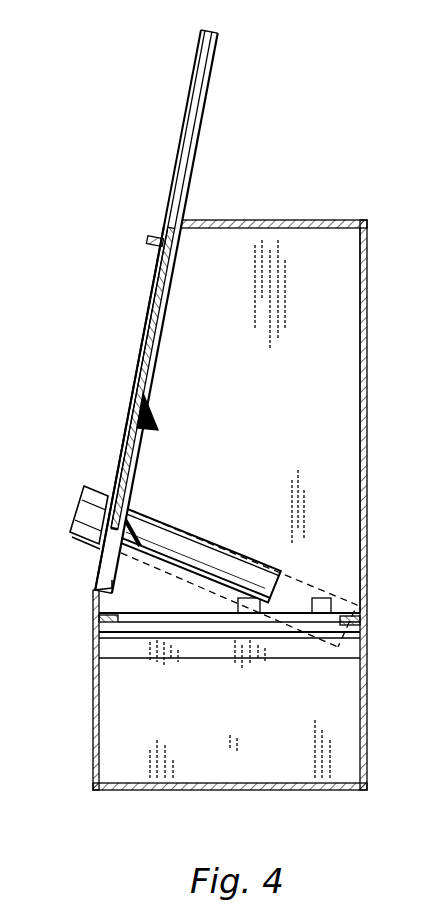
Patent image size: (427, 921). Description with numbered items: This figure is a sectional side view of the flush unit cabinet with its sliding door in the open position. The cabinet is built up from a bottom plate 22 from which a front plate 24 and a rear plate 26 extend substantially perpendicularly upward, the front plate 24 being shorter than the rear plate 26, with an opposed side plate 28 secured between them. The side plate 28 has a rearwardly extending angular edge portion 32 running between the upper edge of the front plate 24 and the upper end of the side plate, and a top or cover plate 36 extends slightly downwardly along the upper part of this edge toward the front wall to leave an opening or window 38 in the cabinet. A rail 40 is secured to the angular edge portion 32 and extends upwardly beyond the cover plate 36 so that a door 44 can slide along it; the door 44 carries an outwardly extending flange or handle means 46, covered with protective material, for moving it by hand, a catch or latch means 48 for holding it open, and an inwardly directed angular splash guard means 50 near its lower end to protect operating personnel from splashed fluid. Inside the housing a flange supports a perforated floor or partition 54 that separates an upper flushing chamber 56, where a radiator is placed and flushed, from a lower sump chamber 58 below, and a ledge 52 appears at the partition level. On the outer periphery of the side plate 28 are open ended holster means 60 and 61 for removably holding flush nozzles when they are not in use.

The bottom plate 22 is at (154, 790).
The front plate 24 is at (93, 690).
The rear plate 26 is at (368, 492).
The side plate 28 is at (337, 277).
The angular edge portion 32 is at (174, 275).
The top or cover plate 36 is at (286, 220).
The opening or window 38 is at (167, 317).
The rail 40 is at (98, 580).
The door 44 is at (148, 330).
The flange or handle means 46 is at (150, 240).
The catch or latch means 48 is at (158, 414).
The splash guard means 50 is at (143, 521).
The ledge 52 is at (111, 614).
The perforated floor or partition 54 is at (196, 614).
The upper flushing chamber 56 is at (284, 393).
The lower sump chamber 58 is at (284, 738).
The holster means 60 is at (80, 506).
The holster means 61 is at (80, 542).